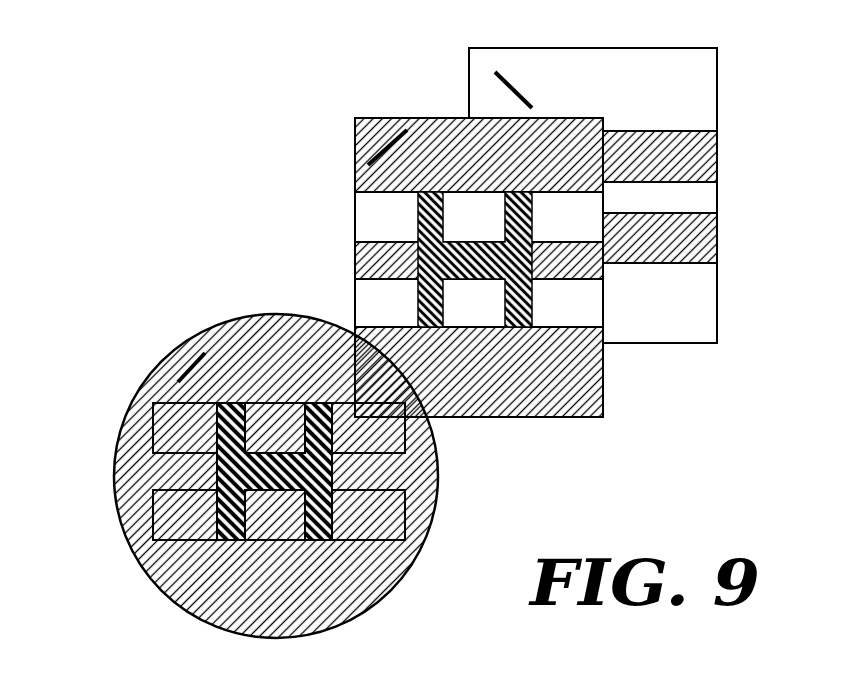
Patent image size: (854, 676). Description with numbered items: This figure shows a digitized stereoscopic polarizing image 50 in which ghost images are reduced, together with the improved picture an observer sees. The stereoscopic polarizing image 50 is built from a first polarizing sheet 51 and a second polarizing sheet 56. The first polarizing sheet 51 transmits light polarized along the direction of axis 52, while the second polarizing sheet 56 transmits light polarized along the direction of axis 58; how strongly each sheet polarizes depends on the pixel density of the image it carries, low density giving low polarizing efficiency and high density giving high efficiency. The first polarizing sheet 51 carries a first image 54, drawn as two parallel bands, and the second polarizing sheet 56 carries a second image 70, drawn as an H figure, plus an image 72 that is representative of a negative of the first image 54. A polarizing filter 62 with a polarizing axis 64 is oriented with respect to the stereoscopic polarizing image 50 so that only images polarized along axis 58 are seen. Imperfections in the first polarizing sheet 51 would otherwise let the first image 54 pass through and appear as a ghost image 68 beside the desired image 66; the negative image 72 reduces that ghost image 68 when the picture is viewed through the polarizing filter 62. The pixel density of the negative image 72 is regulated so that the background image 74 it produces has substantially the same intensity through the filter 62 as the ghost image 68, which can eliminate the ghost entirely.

The digitized stereoscopic polarizing image 50 is at (434, 68).
The first polarizing sheet 51 is at (620, 49).
The axis 52 is at (514, 81).
The first image 54 is at (718, 148).
The second polarizing sheet 56 is at (355, 217).
The axis 58 is at (373, 148).
The polarizing filter 62 is at (302, 314).
The polarizing axis 64 is at (190, 370).
The desired image 66 is at (318, 540).
The ghost image 68 is at (155, 514).
The second image 70 is at (517, 330).
The negative image 72 is at (507, 418).
The background image 74 is at (162, 577).